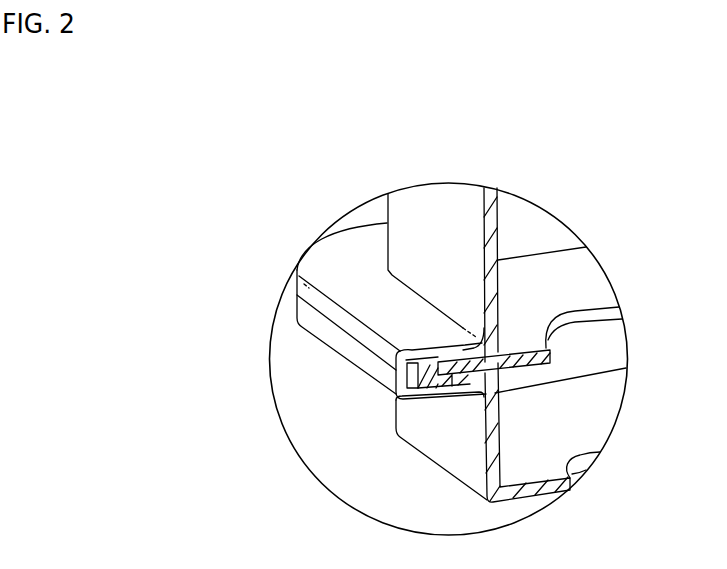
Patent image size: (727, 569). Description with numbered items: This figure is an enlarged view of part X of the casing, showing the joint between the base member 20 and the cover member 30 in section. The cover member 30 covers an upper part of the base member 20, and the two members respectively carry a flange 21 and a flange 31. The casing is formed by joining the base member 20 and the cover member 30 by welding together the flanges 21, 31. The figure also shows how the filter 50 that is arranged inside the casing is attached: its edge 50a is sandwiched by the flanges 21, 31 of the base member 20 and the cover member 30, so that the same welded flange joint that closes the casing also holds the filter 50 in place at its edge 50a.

The base member 20 is at (444, 469).
The flange 21 is at (358, 373).
The cover member 30 is at (431, 216).
The flange 31 is at (327, 270).
The filter 50 is at (588, 287).
The edge 50a is at (463, 350).
The part X is at (556, 216).